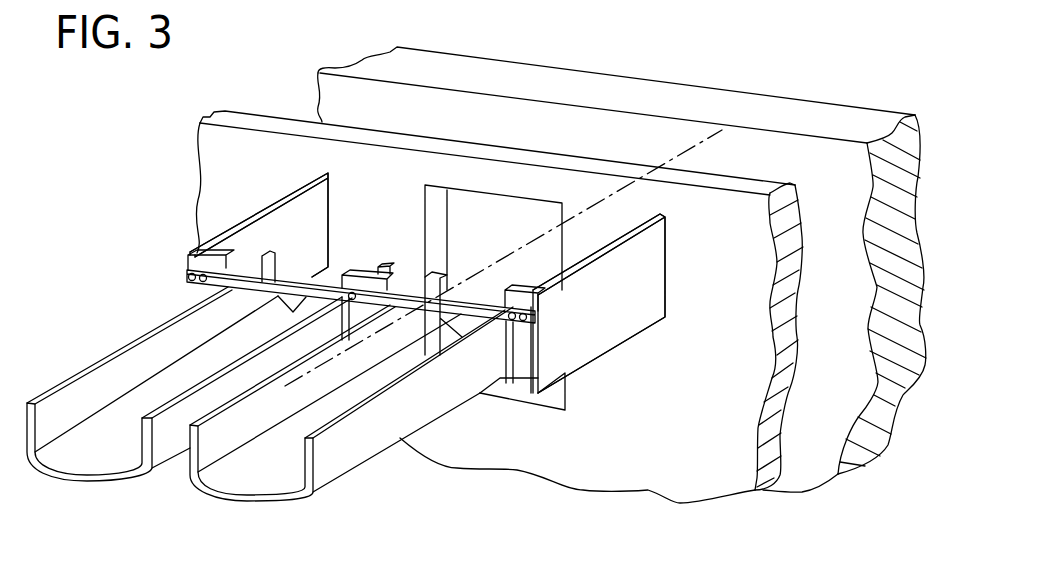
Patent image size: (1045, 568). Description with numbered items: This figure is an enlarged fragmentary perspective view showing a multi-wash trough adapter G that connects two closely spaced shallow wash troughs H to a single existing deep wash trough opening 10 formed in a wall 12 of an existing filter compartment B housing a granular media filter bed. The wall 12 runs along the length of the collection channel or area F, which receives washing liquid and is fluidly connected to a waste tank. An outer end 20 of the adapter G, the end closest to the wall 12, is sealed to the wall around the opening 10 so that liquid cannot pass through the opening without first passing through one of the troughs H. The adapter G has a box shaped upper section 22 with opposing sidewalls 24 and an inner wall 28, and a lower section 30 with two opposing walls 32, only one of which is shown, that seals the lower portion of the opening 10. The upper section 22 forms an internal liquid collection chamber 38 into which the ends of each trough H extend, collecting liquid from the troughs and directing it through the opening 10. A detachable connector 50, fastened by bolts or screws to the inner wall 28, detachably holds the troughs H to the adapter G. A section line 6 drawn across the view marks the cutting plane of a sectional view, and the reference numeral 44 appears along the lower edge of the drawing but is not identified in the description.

The deep wash trough opening 10 is at (522, 217).
The wall 12 is at (730, 415).
The outer end 20 is at (678, 244).
The upper section 22 is at (272, 190).
The sidewalls 24 is at (315, 242).
The inner wall 28 is at (527, 373).
The lower section 30 is at (548, 416).
The opposing walls 32 is at (562, 392).
The liquid collection chamber 38 is at (382, 238).
The anchors 44 is at (490, 567).
The detachable connector 50 is at (265, 288).
The section line 6- 6 is at (650, 141).
The filter compartment B is at (275, 97).
The collection area F is at (822, 178).
The multi-wash trough adapter G is at (690, 296).
The shallow wash troughs H is at (88, 483).